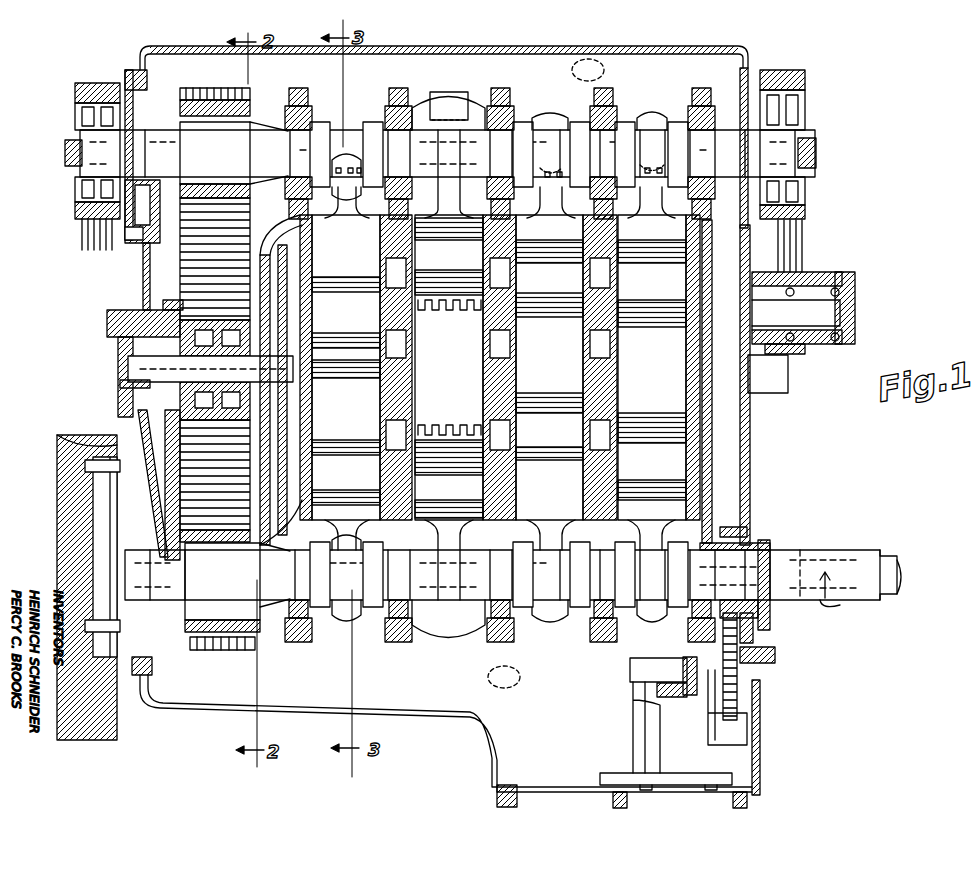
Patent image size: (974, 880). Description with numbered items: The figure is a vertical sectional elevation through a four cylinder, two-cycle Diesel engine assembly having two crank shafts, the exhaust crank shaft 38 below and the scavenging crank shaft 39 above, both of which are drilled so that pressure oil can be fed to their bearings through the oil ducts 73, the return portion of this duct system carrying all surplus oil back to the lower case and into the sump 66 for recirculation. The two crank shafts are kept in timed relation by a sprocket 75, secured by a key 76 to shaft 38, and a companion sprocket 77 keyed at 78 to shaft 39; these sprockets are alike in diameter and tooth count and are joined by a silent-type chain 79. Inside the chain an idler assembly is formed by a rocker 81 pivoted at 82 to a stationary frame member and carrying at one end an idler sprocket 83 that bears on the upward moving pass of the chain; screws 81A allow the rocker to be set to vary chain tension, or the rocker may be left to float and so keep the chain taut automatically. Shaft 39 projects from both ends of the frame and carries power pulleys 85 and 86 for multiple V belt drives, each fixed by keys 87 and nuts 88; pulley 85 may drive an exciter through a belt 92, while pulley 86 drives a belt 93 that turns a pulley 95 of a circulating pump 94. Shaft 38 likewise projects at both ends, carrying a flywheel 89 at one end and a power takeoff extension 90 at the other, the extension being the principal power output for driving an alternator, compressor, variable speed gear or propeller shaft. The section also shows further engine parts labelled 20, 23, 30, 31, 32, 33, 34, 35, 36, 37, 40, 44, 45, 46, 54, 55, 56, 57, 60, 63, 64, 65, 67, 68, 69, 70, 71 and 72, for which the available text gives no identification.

The housing end wall 20 is at (712, 490).
The bottom casing pan 23 is at (438, 718).
The partition wall 30 is at (408, 384).
The partition wall 31 is at (406, 350).
The piston rod 32 is at (600, 478).
The piston ring 33 is at (583, 370).
The piston ring 34 is at (510, 346).
The connecting rod 35 is at (668, 232).
The housing wall 36 is at (140, 252).
The housing cover 37 is at (516, 54).
The crank shaft 38 is at (272, 630).
The crank shaft 39 is at (282, 125).
The connecting rod bearing 40 is at (650, 112).
The cylinder 44 is at (442, 304).
The piston 45 is at (467, 426).
The piston 46 is at (576, 290).
The piston ring 54 is at (499, 430).
The piston 55 is at (499, 367).
The piston ring 56 is at (340, 493).
The connecting rod 57 is at (556, 204).
The piston 60 is at (583, 433).
The connecting rod 63 is at (396, 215).
The bearing 64 is at (495, 88).
The bearing 65 is at (500, 130).
The sump 66 is at (564, 743).
The base plate 67 is at (678, 742).
The bracket 68 is at (640, 716).
The pinion 69 is at (690, 660).
The bracket arm 70 is at (658, 672).
The gear 71 is at (738, 645).
The bearing flange 72 is at (730, 548).
The oil ducts 73 is at (281, 258).
The sprocket 75 is at (206, 645).
The key 76 is at (240, 648).
The companion sprocket 77 is at (232, 104).
The key 78 is at (212, 104).
The chain 79 is at (192, 98).
The rocker 81 is at (172, 303).
The screws 81A is at (118, 386).
The pivot 82 is at (128, 366).
The idler sprocket 83 is at (66, 440).
The power pulley 85 is at (72, 95).
The power pulley 86 is at (806, 82).
The keys 87 is at (70, 138).
The nuts 88 is at (66, 162).
The flywheel 89 is at (60, 460).
The power takeoff extension 90 is at (850, 562).
The multiple V belt 92 is at (96, 256).
The multiple V belt 93 is at (803, 243).
The circulating pump 94 is at (806, 358).
The pulley 95 is at (812, 293).